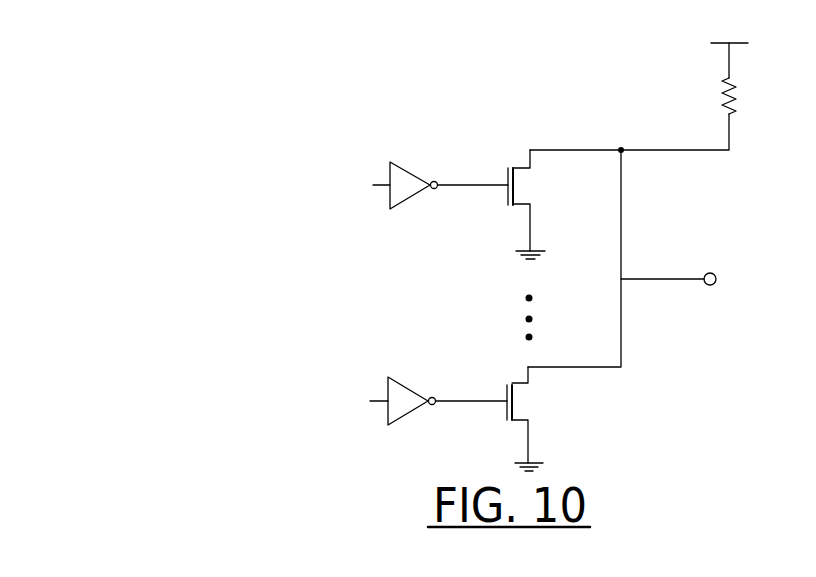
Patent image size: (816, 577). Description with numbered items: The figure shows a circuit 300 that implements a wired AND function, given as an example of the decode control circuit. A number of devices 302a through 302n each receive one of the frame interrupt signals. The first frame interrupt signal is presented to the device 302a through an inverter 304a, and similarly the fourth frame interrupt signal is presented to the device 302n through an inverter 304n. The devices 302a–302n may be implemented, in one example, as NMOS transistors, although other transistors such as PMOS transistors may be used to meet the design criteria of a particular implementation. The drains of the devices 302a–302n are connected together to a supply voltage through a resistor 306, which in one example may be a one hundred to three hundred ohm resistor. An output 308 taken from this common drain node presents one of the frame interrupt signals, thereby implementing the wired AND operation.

The circuit 300 is at (410, 62).
The device 302a is at (518, 166).
The device 302n is at (518, 383).
The inverter 304a is at (402, 198).
The inverter 304n is at (402, 416).
The resistor 306 is at (738, 86).
The output 308 is at (647, 276).